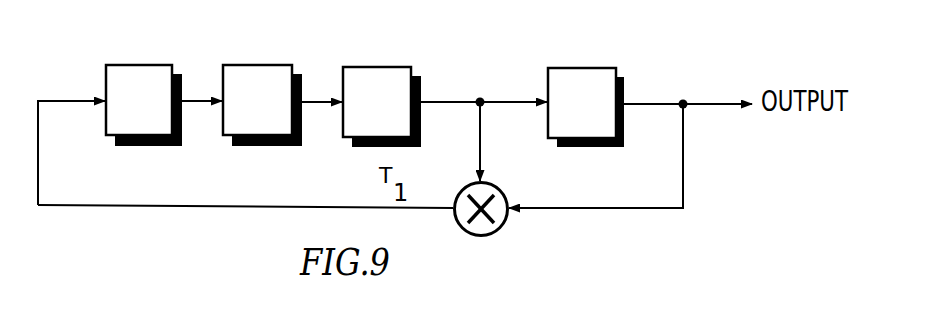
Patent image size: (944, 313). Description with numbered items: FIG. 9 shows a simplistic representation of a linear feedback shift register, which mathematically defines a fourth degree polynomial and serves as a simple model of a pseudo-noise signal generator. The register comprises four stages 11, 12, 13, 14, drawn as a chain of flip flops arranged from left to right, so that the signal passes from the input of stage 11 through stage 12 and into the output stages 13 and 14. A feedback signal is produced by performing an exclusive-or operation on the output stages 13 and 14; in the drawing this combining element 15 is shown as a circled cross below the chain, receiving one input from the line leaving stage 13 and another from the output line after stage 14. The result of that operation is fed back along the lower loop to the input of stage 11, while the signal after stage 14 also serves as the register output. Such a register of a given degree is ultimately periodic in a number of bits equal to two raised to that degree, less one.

The stage 11 is at (123, 63).
The stage 12 is at (240, 63).
The output stage 13 is at (377, 65).
The output stage 14 is at (563, 66).
The multiplier 15 is at (489, 184).